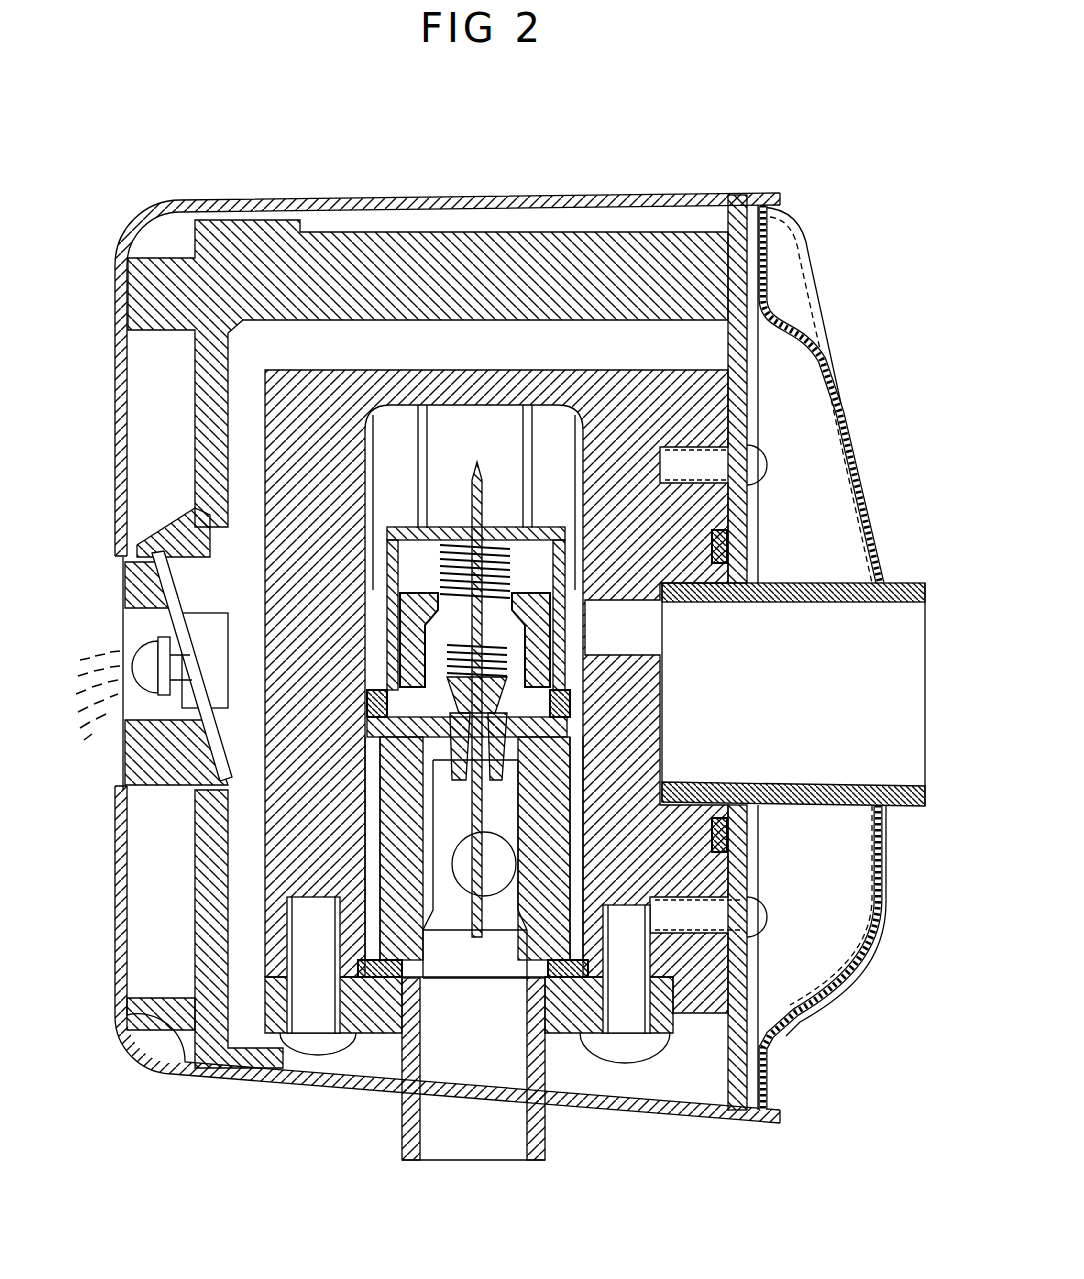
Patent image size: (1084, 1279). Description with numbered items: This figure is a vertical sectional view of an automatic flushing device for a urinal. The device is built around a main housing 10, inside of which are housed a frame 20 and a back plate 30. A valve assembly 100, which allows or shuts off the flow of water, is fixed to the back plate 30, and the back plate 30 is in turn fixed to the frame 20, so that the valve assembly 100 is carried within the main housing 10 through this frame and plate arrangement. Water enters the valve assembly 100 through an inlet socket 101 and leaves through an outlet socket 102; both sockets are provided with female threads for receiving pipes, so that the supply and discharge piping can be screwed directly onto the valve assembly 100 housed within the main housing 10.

The main housing 10 is at (357, 200).
The frame 20 is at (205, 283).
The back plate 30 is at (745, 432).
The valve assembly 100 is at (688, 364).
The inlet socket 101 is at (700, 657).
The outlet socket 102 is at (470, 1020).